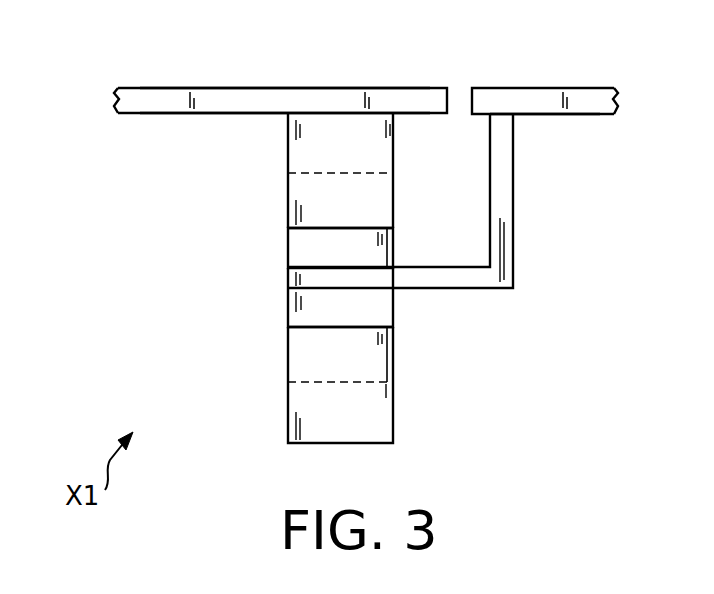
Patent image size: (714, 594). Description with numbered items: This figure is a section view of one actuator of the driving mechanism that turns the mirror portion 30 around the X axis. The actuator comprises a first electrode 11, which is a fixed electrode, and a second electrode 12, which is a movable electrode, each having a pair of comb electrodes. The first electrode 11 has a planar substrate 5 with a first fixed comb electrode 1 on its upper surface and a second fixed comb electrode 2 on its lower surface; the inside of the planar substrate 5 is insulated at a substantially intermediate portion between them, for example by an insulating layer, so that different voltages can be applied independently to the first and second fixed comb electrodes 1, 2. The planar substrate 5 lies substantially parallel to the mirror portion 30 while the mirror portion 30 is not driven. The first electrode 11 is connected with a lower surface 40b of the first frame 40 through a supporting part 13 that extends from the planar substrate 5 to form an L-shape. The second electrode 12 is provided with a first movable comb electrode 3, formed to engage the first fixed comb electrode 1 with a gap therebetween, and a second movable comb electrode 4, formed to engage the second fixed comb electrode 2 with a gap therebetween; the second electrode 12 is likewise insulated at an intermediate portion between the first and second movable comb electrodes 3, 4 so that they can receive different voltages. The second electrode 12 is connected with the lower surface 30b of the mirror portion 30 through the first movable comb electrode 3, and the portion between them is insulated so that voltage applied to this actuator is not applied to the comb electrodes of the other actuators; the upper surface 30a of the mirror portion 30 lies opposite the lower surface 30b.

The mirror portion 30 is at (355, 93).
The upper surface of first plate 30a is at (197, 88).
The lower surface of the mirror portion 30b is at (173, 115).
The first frame 40 is at (580, 93).
The lower surface of the first frame 40b is at (545, 115).
The first movable comb electrode 3 is at (372, 156).
The first fixed comb electrode 1 is at (297, 242).
The planar substrate 5 is at (298, 277).
The second fixed comb electrode 2 is at (298, 318).
The second movable comb electrode 4 is at (373, 407).
The first electrode 11 is at (230, 193).
The second electrode 12 is at (442, 165).
The supporting part 13 is at (515, 268).